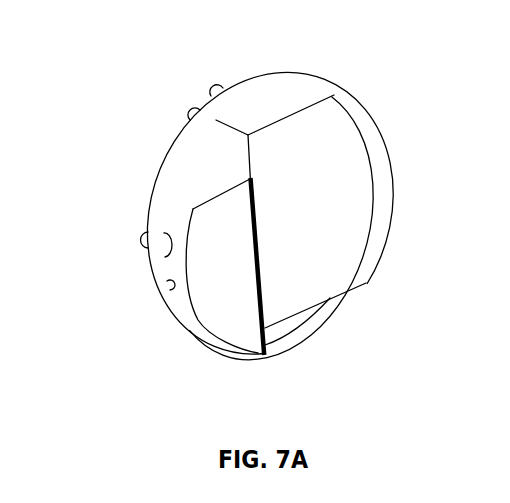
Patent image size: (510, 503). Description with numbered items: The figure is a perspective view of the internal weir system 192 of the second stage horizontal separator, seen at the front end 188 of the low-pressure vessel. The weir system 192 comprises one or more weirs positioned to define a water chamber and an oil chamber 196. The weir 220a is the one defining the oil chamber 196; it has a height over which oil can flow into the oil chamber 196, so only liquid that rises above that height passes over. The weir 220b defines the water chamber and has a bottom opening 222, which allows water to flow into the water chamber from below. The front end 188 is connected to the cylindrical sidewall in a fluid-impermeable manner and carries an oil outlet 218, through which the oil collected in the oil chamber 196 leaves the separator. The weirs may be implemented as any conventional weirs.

The front end 188 is at (245, 82).
The internal weir system 192 is at (258, 203).
The oil chamber 196 is at (205, 170).
The oil outlet 218 is at (137, 238).
The weir 220a is at (192, 208).
The weir 220b is at (298, 110).
The bottom opening 222 is at (310, 310).